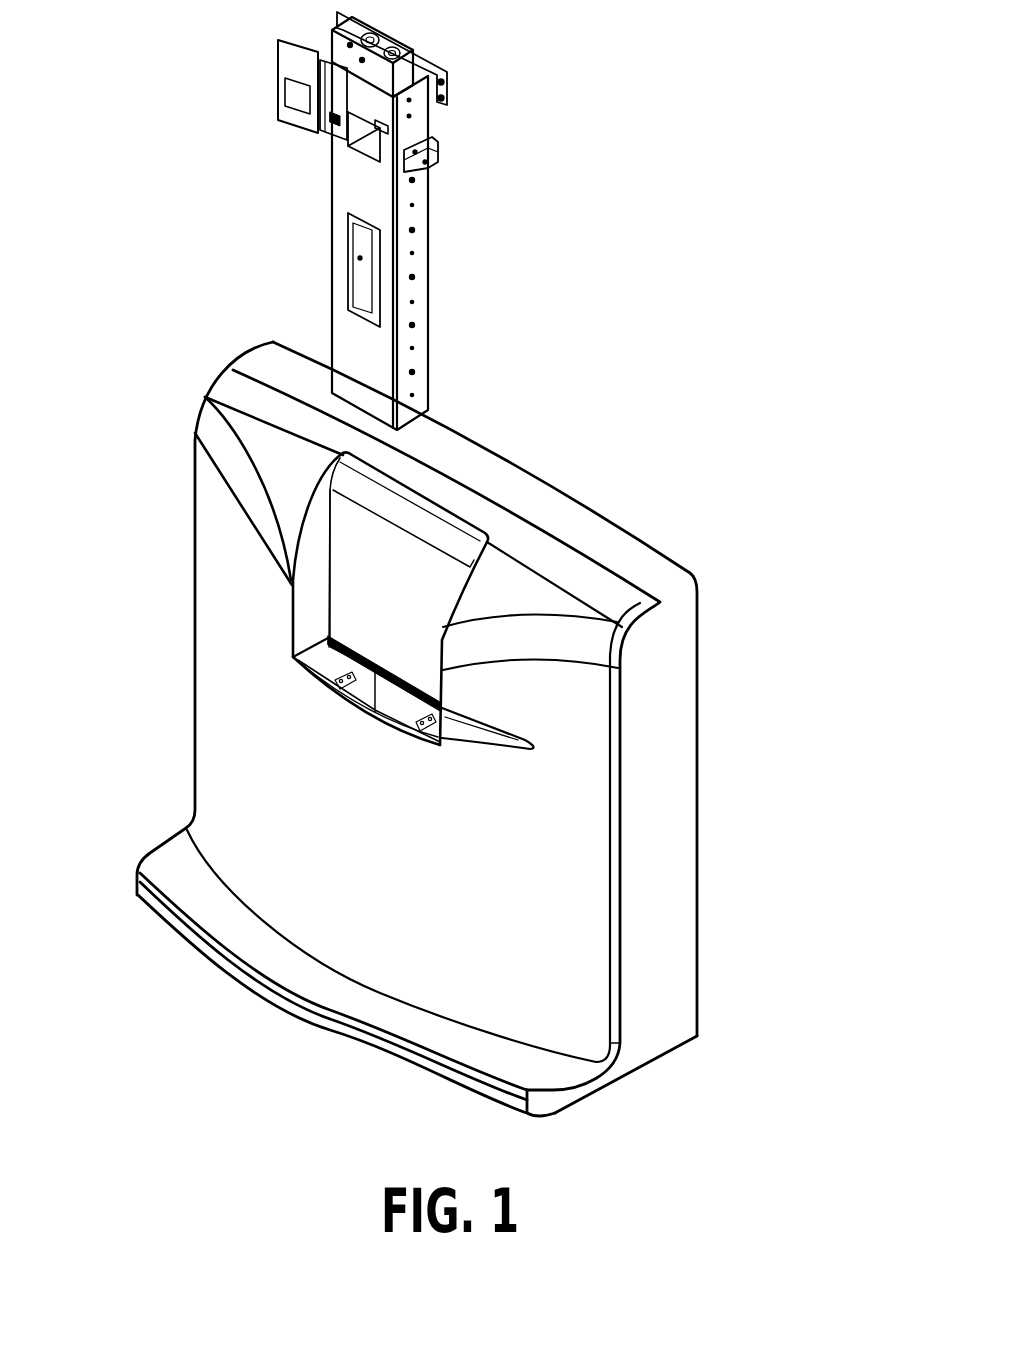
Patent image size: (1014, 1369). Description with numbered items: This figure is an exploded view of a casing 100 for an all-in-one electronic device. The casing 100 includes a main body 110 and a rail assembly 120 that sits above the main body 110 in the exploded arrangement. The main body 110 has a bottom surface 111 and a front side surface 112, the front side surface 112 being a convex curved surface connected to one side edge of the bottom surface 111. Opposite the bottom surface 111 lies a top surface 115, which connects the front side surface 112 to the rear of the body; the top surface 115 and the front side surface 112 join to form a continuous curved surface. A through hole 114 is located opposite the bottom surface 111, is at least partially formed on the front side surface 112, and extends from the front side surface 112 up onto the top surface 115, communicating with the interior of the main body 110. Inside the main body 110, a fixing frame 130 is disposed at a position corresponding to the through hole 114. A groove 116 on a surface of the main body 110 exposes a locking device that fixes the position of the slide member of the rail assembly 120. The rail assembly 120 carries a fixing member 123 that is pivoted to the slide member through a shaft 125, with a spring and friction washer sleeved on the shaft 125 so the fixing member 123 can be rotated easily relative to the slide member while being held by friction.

The casing 100 is at (602, 128).
The main body 110 is at (602, 497).
The bottom surface 111 is at (628, 1080).
The front side surface 112 is at (528, 863).
The through hole 114 is at (350, 562).
The top surface 115 is at (262, 400).
The groove 116 is at (505, 736).
The rail assembly 120 is at (355, 193).
The fixing member 123 is at (292, 58).
The shaft 125 is at (387, 128).
The fixing frame 130 is at (352, 693).